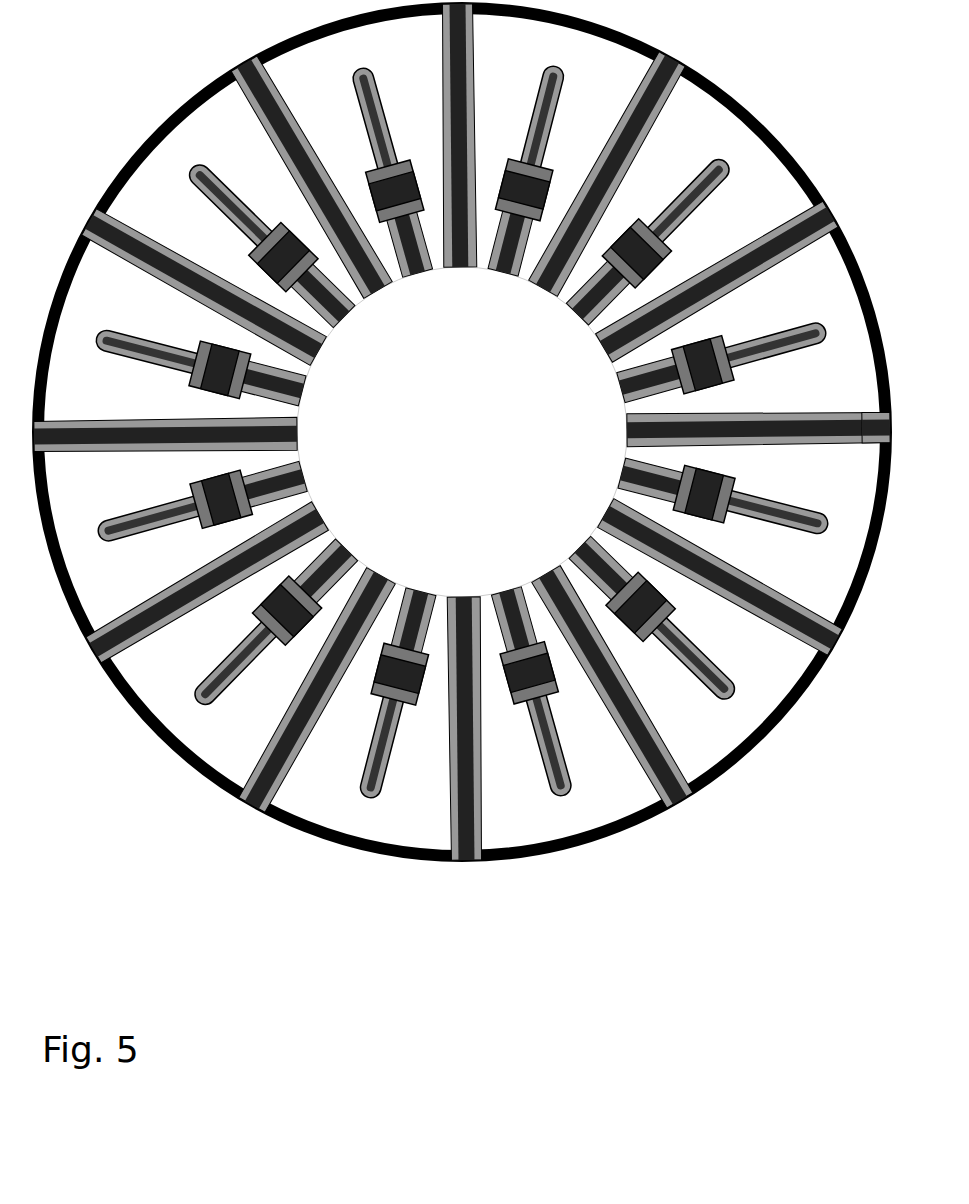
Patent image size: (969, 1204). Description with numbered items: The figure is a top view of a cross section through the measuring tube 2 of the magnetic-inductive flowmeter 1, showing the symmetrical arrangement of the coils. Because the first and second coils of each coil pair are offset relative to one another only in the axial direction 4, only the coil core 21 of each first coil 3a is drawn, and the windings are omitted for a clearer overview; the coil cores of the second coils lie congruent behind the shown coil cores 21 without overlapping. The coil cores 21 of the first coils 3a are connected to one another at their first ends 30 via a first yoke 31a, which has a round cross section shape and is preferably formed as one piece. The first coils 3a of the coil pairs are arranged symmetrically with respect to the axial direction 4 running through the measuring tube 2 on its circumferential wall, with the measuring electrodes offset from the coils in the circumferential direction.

The magnetic-inductive flowmeter 1 is at (80, 84).
The measuring tube 2 is at (528, 297).
The first coil 3a is at (462, 432).
The axial direction 4 is at (383, 132).
The coil core 21 is at (758, 404).
The first end 30 is at (861, 438).
The first yoke 31a is at (722, 89).